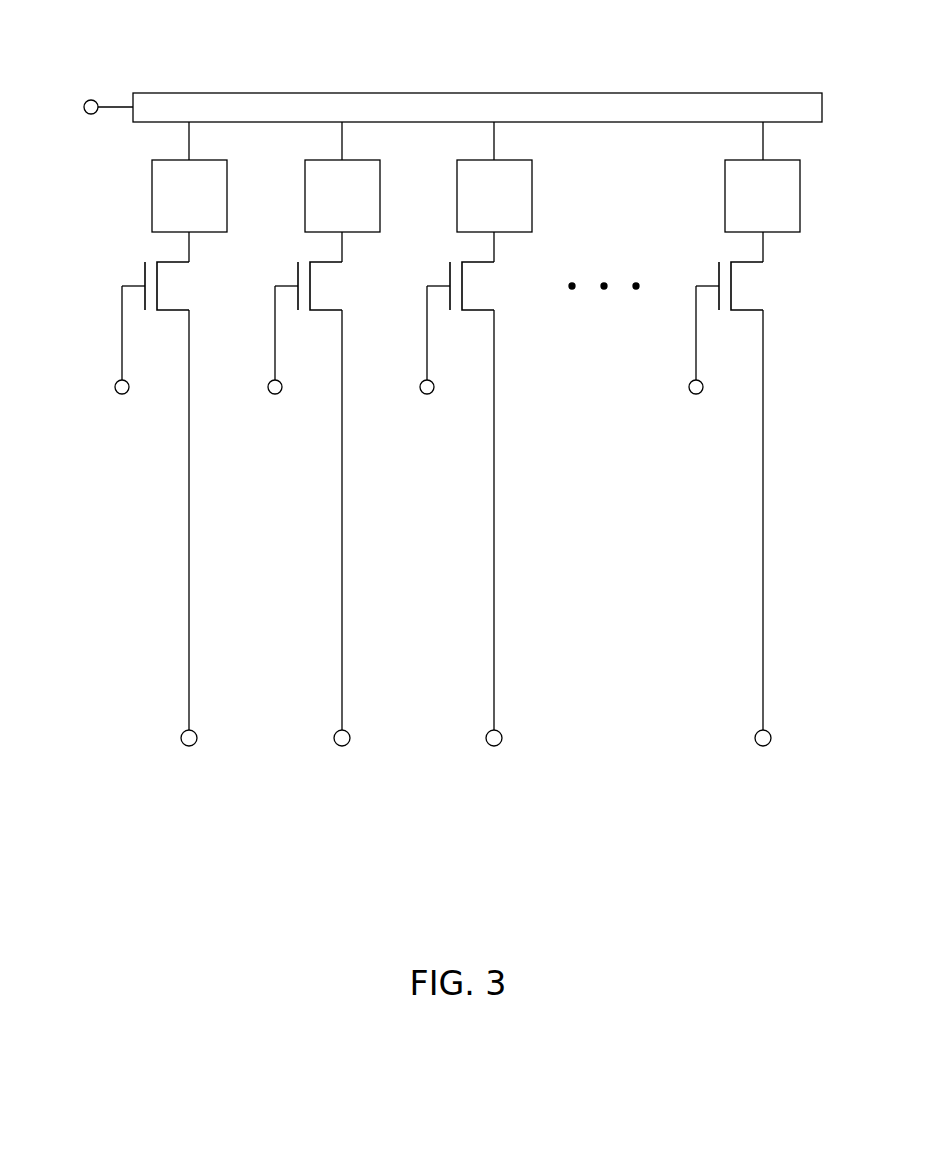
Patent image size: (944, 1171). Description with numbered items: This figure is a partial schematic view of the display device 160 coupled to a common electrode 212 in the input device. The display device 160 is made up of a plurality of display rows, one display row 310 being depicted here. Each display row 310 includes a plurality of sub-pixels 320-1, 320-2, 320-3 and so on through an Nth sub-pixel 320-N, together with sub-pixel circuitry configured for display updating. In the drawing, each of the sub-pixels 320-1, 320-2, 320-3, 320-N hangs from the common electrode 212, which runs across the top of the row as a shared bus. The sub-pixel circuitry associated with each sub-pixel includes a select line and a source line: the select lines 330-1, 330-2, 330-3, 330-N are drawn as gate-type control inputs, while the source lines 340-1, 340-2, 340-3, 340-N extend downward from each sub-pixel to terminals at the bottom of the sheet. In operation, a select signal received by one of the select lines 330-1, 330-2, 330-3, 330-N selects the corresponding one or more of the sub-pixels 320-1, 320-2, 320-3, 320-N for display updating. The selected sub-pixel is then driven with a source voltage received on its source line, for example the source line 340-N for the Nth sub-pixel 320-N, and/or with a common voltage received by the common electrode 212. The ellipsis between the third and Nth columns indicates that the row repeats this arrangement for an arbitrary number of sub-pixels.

The common electrode 212 is at (418, 93).
The display row 310 is at (102, 192).
The display device 160 is at (136, 462).
The sub-pixel 320-1 is at (161, 207).
The sub-pixel 320-2 is at (314, 207).
The sub-pixel 320-3 is at (466, 207).
The sub-pixel 320-N is at (733, 207).
The select line 330-1 is at (126, 354).
The select line 330-2 is at (279, 354).
The select line 330-3 is at (431, 354).
The select line 330-N is at (697, 354).
The source line 340-1 is at (190, 548).
The source line 340-2 is at (343, 548).
The source line 340-3 is at (495, 548).
The source line 340-N is at (764, 548).